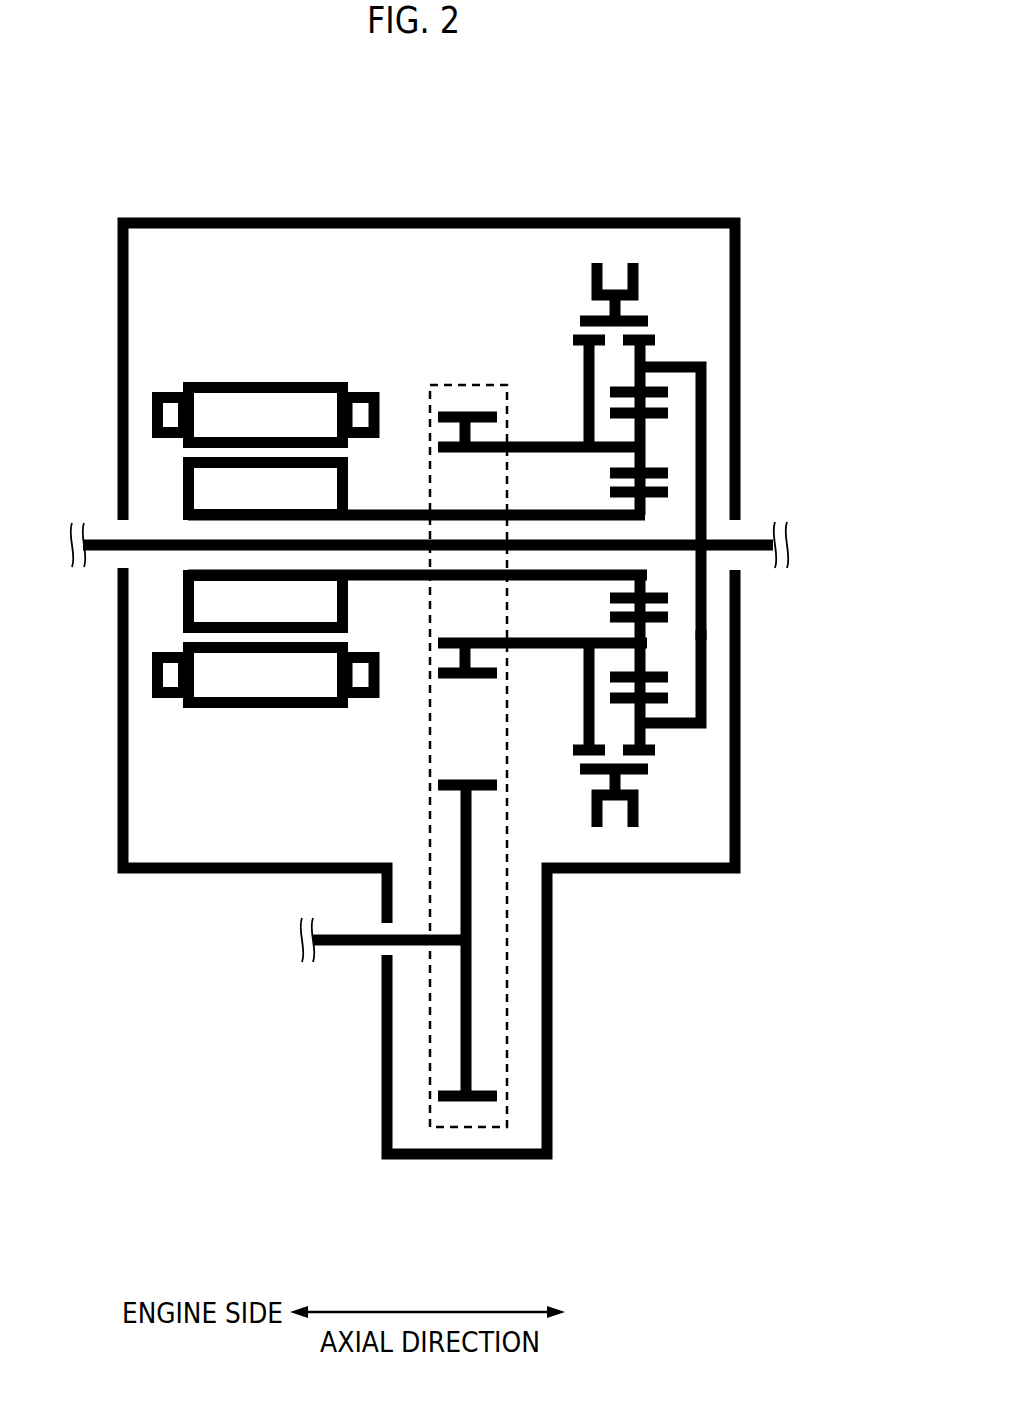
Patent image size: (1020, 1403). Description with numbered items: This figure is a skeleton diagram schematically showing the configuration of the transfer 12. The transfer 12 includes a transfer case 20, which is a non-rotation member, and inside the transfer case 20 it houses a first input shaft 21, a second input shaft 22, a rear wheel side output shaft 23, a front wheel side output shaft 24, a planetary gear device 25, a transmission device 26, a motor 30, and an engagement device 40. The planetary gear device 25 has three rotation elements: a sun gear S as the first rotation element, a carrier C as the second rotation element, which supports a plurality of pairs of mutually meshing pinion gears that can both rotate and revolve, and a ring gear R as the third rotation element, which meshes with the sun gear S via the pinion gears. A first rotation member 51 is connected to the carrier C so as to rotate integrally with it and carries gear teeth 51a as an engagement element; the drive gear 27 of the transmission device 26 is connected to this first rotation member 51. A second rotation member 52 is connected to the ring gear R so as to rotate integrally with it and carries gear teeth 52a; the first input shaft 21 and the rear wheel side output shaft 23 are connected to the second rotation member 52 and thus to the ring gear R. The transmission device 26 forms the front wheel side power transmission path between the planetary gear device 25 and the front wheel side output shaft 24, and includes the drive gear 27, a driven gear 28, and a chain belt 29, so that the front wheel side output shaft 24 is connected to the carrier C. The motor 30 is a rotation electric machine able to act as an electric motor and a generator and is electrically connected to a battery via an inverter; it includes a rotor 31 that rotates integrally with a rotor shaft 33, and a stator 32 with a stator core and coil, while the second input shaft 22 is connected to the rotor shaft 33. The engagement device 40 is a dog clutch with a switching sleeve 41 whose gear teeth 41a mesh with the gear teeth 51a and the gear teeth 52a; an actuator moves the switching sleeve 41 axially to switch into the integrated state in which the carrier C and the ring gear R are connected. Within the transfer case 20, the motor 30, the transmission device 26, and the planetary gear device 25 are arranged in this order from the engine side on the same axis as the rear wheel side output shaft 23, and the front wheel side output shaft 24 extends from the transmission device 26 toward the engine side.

The transfer 12 is at (211, 126).
The transfer case 20 is at (158, 218).
The first input shaft 21 is at (102, 552).
The second input shaft 22 is at (531, 510).
The rear wheel side output shaft 23 is at (750, 553).
The front wheel side output shaft 24 is at (340, 945).
The planetary gear device 25 is at (680, 344).
The transmission device 26 is at (465, 352).
The drive gear 27 is at (447, 412).
The driven gear 28 is at (480, 1102).
The chain belt 29 is at (507, 1050).
The motor 30 is at (263, 352).
The rotor 31 is at (212, 485).
The stator 32 is at (213, 400).
The rotor shaft 33 is at (387, 510).
The engagement device 40 is at (618, 238).
The switching sleeve 41 is at (596, 283).
The gear teeth 41a is at (640, 330).
The first rotation member 51 is at (551, 442).
The gear teeth 51a is at (576, 758).
The second rotation member 52 is at (705, 440).
The gear teeth 52a is at (650, 757).
The ring gear R is at (660, 384).
The sun gear S is at (660, 500).
The carrier C is at (613, 452).